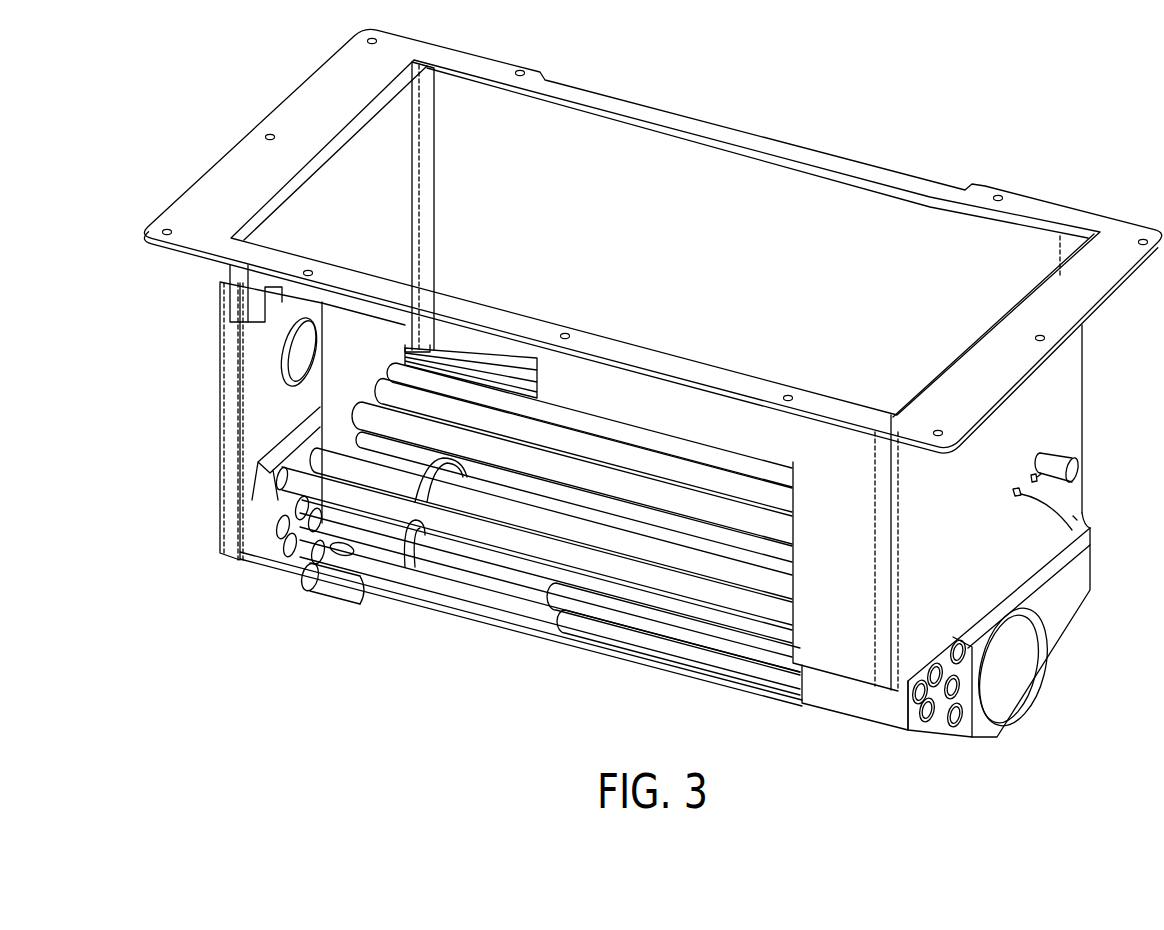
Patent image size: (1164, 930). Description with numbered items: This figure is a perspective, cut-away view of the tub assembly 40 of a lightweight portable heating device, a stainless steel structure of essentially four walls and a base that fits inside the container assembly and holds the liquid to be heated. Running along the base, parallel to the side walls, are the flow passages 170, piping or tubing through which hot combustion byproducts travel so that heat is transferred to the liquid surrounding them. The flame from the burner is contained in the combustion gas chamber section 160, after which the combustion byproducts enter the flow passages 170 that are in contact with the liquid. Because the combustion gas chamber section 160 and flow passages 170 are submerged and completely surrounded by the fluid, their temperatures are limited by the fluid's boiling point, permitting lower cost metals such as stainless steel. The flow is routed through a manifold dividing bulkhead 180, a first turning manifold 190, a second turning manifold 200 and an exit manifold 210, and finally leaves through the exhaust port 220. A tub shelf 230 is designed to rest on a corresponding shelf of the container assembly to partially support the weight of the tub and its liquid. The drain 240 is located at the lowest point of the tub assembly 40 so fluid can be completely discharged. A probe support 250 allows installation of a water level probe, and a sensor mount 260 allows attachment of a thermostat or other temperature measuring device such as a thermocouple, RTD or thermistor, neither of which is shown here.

The tub assembly 40 is at (847, 185).
The combustion gas chamber section 160 is at (1023, 677).
The flow passages 170 is at (540, 582).
The manifold dividing bulkhead 180 is at (285, 448).
The first turning manifold 190 is at (298, 460).
The second turning manifold 200 is at (933, 730).
The exit manifold 210 is at (272, 402).
The exhaust port 220 is at (297, 350).
The shelf 230 is at (448, 343).
The drain 240 is at (318, 592).
The probe support 250 is at (1078, 468).
The sensor mount 260 is at (1020, 492).